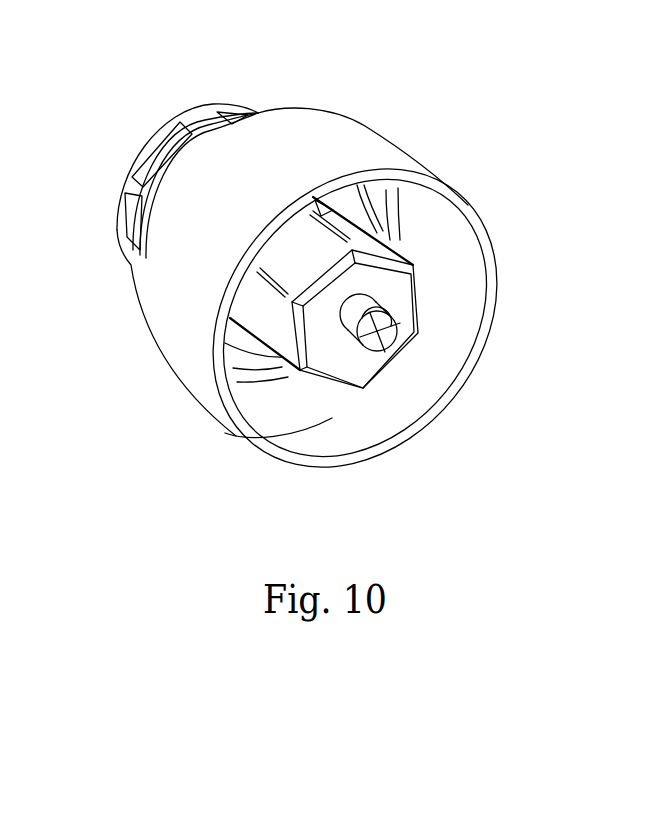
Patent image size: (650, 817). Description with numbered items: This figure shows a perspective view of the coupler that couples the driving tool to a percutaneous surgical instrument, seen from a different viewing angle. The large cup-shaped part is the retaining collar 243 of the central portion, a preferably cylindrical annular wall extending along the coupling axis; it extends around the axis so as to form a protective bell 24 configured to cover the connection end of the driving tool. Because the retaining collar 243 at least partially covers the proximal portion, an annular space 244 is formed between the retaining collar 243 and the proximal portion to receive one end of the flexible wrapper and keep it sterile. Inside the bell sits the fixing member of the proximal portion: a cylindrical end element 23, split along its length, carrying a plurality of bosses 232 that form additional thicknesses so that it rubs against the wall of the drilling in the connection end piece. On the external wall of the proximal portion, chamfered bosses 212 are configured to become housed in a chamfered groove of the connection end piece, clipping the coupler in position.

The protective bell 24 is at (393, 123).
The retaining collar 243 is at (253, 117).
The annular space 244 is at (225, 433).
The chamfered bosses 212 is at (328, 197).
The cylindrical end element 23 is at (388, 356).
The bosses 232 is at (353, 311).